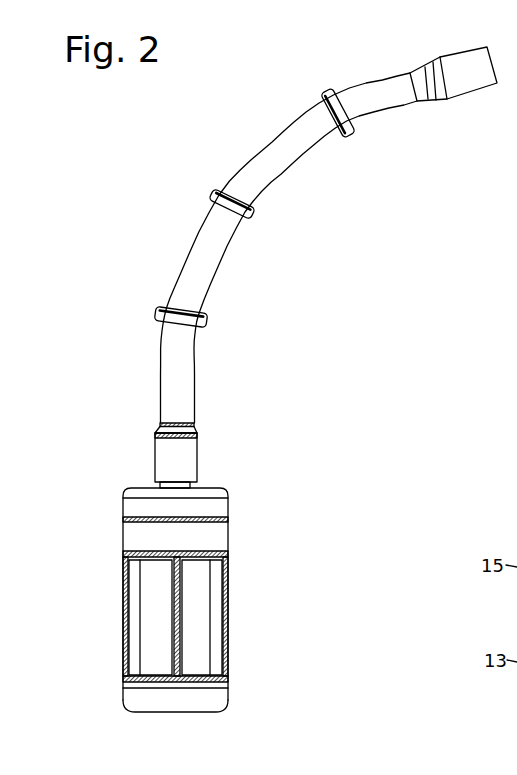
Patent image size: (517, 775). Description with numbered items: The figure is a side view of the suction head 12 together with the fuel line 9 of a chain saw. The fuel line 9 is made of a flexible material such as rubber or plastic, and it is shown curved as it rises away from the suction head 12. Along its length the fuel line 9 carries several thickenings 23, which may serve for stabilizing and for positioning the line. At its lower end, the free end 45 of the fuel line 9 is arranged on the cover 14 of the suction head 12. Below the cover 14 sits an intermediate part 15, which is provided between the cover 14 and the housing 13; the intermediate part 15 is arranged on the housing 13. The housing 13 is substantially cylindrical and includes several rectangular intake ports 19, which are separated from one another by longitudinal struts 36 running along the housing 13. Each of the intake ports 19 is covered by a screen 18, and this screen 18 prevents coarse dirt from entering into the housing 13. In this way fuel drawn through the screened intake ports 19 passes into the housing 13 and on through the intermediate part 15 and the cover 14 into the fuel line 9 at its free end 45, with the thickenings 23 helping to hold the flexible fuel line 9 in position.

The fuel line 9 is at (198, 277).
The thickenings 23 is at (328, 90).
The free end 45 is at (178, 462).
The suction head 12 is at (220, 597).
The cover 14 is at (215, 503).
The intermediate part 15 is at (210, 537).
The longitudinal struts 36 is at (133, 604).
The screen 18 is at (197, 603).
The intake ports 19 is at (210, 627).
The housing 13 is at (213, 693).